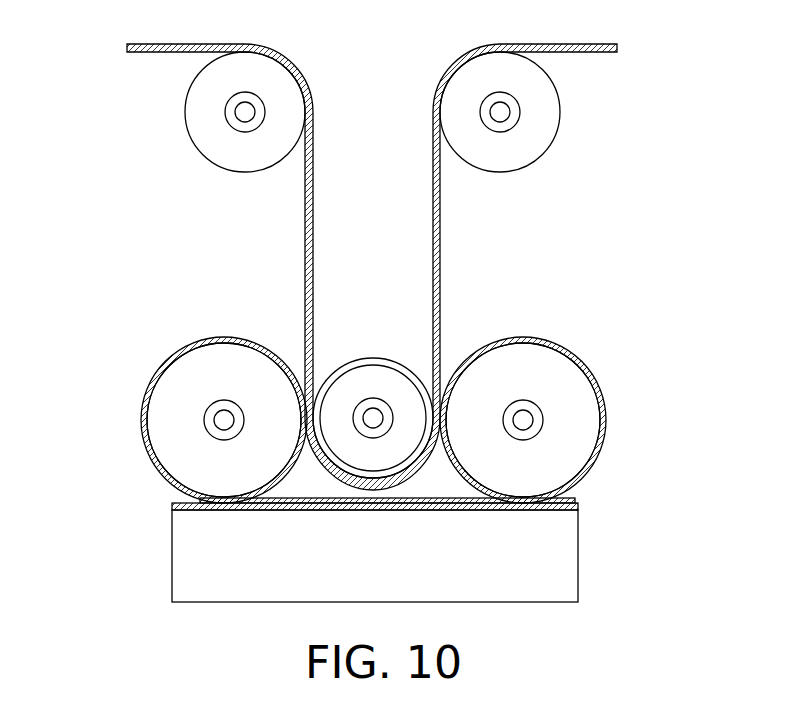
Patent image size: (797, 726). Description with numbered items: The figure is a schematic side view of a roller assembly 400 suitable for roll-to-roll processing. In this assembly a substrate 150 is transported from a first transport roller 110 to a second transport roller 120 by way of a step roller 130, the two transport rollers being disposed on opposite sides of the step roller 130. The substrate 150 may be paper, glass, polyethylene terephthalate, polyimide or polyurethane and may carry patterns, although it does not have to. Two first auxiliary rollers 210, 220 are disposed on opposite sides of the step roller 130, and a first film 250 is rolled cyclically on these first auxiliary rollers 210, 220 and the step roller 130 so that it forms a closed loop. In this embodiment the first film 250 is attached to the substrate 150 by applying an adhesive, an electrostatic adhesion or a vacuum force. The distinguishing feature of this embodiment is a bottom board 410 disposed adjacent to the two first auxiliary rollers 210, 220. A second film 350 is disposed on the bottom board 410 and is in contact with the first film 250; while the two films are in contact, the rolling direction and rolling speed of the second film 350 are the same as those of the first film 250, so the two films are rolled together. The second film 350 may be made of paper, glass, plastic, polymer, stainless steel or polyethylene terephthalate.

The substrate 150 is at (175, 43).
The first transport roller 110 is at (200, 108).
The second transport roller 120 is at (545, 108).
The step roller 130 is at (403, 392).
The first auxiliary roller 210 is at (166, 391).
The first auxiliary roller 220 is at (580, 424).
The first film 250 is at (185, 348).
The second film 350 is at (577, 507).
The bottom board 410 is at (573, 577).
The roller assembly 400 is at (768, 610).